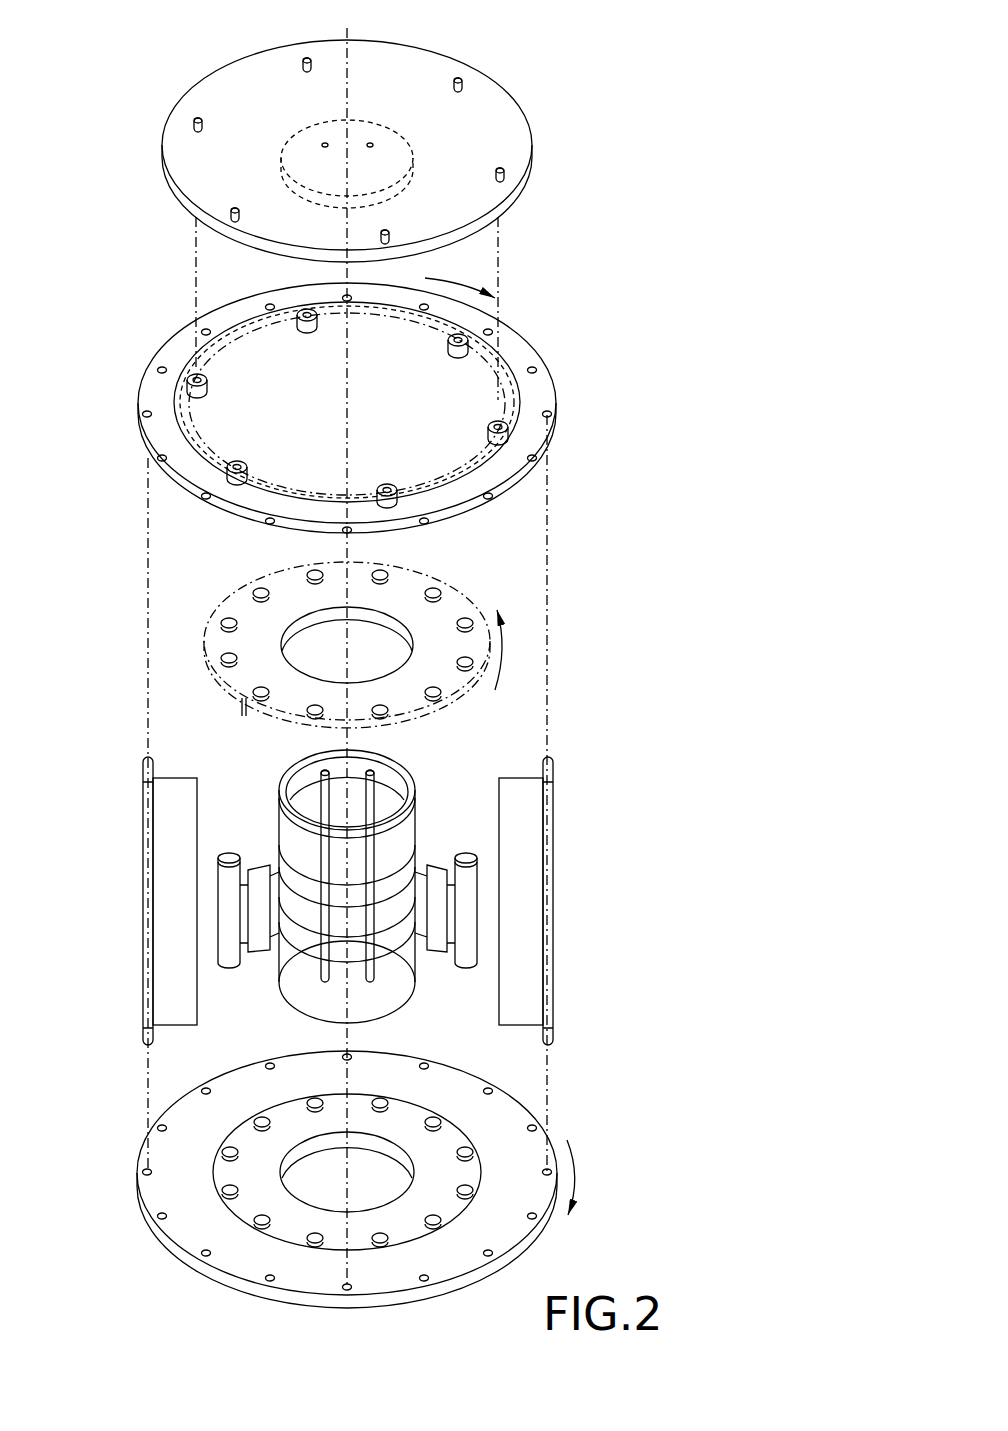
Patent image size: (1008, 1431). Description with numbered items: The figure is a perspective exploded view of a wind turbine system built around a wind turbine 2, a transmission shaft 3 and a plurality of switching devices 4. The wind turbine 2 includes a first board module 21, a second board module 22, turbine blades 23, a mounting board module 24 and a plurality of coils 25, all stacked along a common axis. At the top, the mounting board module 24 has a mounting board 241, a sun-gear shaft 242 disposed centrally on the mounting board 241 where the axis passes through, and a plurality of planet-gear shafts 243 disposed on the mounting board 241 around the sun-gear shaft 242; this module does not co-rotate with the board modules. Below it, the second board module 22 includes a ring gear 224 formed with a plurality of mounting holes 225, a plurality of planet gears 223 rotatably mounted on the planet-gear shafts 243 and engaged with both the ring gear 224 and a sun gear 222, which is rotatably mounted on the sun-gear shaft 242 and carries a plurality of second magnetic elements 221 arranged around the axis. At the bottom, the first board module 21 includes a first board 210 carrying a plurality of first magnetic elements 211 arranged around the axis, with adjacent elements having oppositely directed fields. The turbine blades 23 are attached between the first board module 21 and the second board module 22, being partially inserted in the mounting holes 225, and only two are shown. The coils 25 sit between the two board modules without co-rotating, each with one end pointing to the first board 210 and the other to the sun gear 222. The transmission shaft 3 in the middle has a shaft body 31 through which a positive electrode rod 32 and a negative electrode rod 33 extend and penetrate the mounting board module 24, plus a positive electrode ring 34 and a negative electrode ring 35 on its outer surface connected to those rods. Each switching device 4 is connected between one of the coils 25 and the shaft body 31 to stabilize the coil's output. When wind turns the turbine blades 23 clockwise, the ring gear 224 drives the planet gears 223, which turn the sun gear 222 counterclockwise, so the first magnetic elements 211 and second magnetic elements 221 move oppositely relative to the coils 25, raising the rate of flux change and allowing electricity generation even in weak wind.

The wind turbine 2 is at (518, 83).
The first board module 21 is at (522, 1093).
The first board 210 is at (542, 1122).
The first magnetic elements 211 is at (220, 1188).
The second board module 22 is at (563, 352).
The second magnetic elements 221 is at (221, 657).
The sun gear 222 is at (212, 622).
The planet gears 223 is at (467, 355).
The ring gear 224 is at (504, 502).
The mounting holes 225 is at (553, 415).
The turbine blades 23 is at (145, 957).
The mounting board module 24 is at (543, 140).
The mounting board 241 is at (165, 160).
The sun-gear shaft 242 is at (282, 177).
The planet-gear shafts 243 is at (192, 122).
The coils 25 is at (218, 925).
The transmission shaft 3 is at (432, 795).
The shaft body 31 is at (279, 831).
The positive electrode rod 32 is at (320, 800).
The negative electrode rod 33 is at (372, 798).
The positive electrode ring 34 is at (279, 855).
The negative electrode ring 35 is at (330, 958).
The switching devices 4 is at (262, 955).